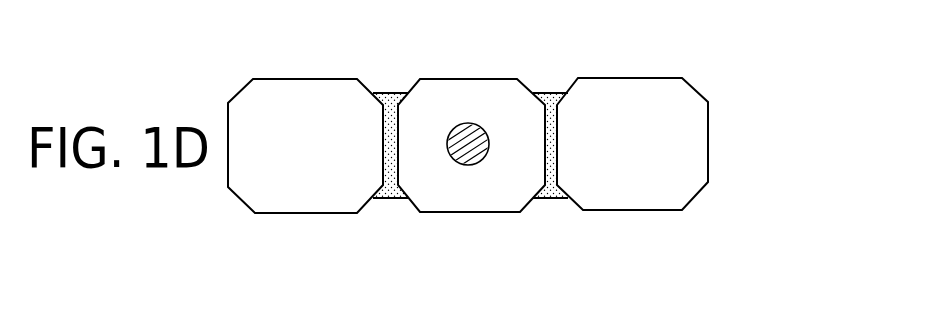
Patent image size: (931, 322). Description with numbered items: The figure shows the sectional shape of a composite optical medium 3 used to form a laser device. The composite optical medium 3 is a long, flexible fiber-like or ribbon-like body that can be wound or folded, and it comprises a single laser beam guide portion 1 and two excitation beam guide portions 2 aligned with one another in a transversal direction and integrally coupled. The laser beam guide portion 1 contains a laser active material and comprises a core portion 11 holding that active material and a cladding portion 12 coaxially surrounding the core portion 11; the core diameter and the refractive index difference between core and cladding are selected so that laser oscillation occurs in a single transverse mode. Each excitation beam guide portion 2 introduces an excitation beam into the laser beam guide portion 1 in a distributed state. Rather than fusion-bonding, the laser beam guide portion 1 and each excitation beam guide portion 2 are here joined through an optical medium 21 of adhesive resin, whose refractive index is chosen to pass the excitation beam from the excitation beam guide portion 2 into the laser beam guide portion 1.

The laser beam guide portion 1 is at (462, 199).
The excitation beam guide portion 2 is at (265, 100).
The composite optical medium 3 is at (711, 141).
The core portion 11 is at (472, 126).
The cladding portion 12 is at (428, 95).
The optical medium 21 is at (388, 200).